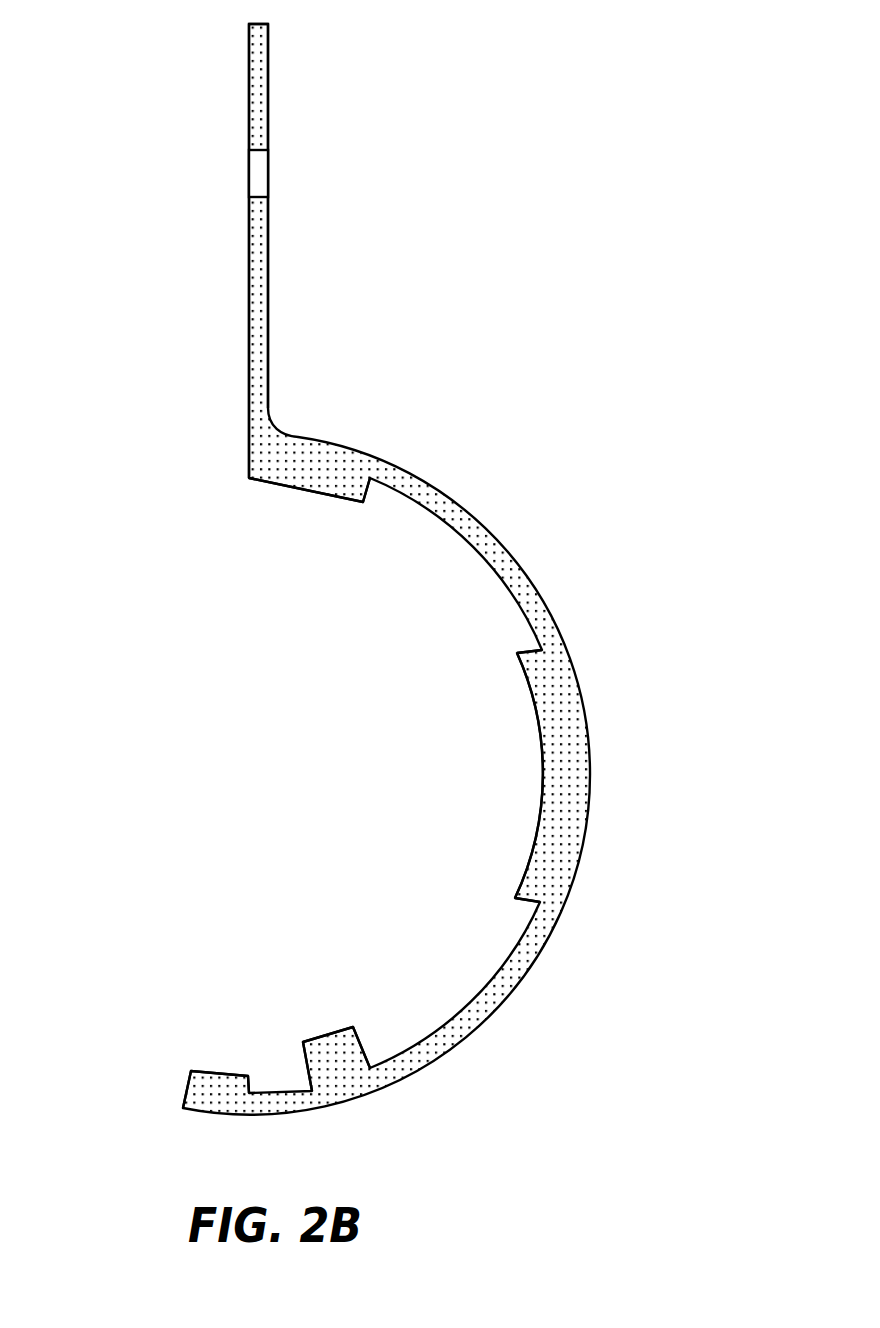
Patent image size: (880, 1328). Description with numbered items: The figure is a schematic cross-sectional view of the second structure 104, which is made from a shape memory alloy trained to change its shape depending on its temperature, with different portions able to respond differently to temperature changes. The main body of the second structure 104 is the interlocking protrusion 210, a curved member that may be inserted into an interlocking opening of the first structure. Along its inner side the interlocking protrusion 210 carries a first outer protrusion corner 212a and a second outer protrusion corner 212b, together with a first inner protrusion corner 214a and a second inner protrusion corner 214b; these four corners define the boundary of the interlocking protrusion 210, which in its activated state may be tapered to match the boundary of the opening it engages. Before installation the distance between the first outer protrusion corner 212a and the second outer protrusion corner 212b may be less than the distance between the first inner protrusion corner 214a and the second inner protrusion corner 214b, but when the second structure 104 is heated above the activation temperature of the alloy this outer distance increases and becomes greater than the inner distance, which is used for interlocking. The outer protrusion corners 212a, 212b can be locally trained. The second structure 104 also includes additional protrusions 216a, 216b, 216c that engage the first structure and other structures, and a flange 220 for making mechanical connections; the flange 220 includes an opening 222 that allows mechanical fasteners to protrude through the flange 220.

The second structure 104 is at (321, 569).
The interlocking protrusion 210 is at (553, 775).
The first outer protrusion corner 212a is at (517, 653).
The second outer protrusion corner 212b is at (517, 897).
The first inner protrusion corner 214a is at (542, 648).
The second inner protrusion corner 214b is at (540, 902).
The protrusion 216a is at (292, 465).
The protrusion 216b is at (303, 1050).
The protrusion 216c is at (207, 1089).
The flange 220 is at (250, 277).
The opening 222 is at (253, 172).